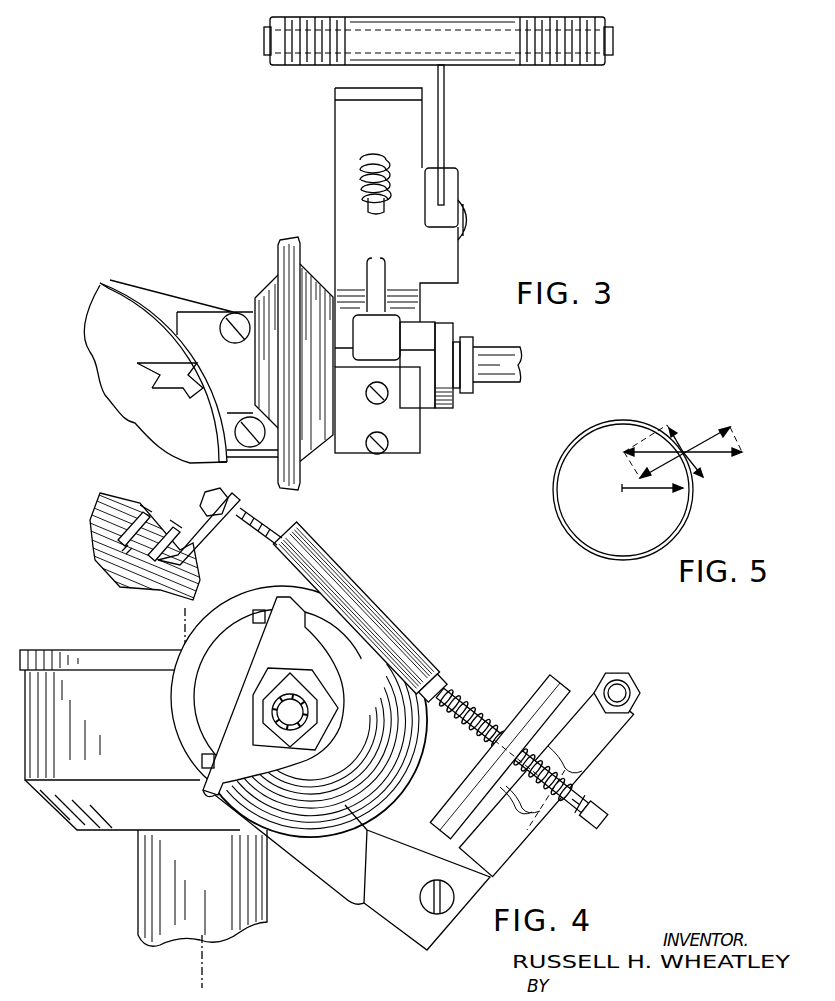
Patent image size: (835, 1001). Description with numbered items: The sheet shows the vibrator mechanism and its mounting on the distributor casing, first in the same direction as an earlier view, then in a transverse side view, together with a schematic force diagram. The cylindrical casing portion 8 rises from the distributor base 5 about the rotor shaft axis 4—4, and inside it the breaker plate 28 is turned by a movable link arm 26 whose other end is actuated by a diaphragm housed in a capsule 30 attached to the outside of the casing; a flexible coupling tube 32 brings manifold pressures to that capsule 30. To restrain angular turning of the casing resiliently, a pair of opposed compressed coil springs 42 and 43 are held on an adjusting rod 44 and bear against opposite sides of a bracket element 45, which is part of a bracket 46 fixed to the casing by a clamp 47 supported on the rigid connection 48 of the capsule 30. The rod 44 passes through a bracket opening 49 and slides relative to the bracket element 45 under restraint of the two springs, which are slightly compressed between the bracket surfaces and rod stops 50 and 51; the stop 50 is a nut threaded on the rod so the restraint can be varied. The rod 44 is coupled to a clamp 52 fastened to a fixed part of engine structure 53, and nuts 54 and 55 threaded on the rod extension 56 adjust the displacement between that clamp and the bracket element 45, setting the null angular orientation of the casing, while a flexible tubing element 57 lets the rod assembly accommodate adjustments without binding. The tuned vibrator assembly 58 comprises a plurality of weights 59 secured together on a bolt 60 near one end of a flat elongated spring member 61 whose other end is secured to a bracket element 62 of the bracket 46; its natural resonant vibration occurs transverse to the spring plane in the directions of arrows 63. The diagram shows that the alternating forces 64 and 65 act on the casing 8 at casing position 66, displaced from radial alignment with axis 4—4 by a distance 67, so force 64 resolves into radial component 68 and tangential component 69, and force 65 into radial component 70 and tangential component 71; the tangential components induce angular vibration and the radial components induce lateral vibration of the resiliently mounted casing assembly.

In FIG. 5, the rotor shaft axis 4 is at (622, 490).
In FIG. 4, the rotor shaft axis 4 is at (183, 626).
In FIG. 4, the distributor base 5 is at (150, 900).
In FIG. 3, the casing portion 8 is at (120, 288).
In FIG. 5, the casing portion 8 is at (558, 522).
In FIG. 4, the casing portion 8 is at (140, 700).
In FIG. 3, the link arm 26 is at (175, 384).
In FIG. 3, the breaker plate 28 is at (112, 350).
In FIG. 3, the capsule 30 is at (302, 458).
In FIG. 4, the capsule 30 is at (248, 654).
In FIG. 3, the coupling tube 32 is at (520, 345).
In FIG. 4, the coupling tube 32 is at (274, 702).
In FIG. 3, the coil spring 42 is at (366, 195).
In FIG. 4, the coil spring 42 is at (474, 727).
In FIG. 4, the coil spring 43 is at (567, 815).
In FIG. 3, the adjusting rod 44 is at (382, 208).
In FIG. 4, the adjusting rod 44 is at (465, 712).
In FIG. 3, the bracket element 45 is at (337, 132).
In FIG. 4, the bracket element 45 is at (540, 690).
In FIG. 3, the bracket 46 is at (408, 430).
In FIG. 4, the bracket 46 is at (345, 892).
In FIG. 3, the clamp 47 is at (388, 342).
In FIG. 4, the clamp 47 is at (296, 655).
In FIG. 3, the rigid connection 48 is at (420, 330).
In FIG. 4, the rigid connection 48 is at (255, 714).
In FIG. 4, the bracket opening 49 is at (515, 745).
In FIG. 4, the rod stop 50 is at (440, 682).
In FIG. 4, the rod stop 51 is at (600, 808).
In FIG. 4, the clamp 52 is at (178, 547).
In FIG. 4, the engine structure 53 is at (118, 565).
In FIG. 4, the nut 54 is at (212, 495).
In FIG. 4, the nut 55 is at (240, 505).
In FIG. 4, the rod extension 56 is at (250, 535).
In FIG. 4, the flexible tubing element 57 is at (362, 612).
In FIG. 3, the vibrator assembly 58 is at (520, 132).
In FIG. 4, the vibrator assembly 58 is at (584, 652).
In FIG. 3, the weights 59 is at (330, 66).
In FIG. 4, the weights 59 is at (640, 693).
In FIG. 3, the bolt 60 is at (272, 36).
In FIG. 4, the bolt 60 is at (622, 686).
In FIG. 3, the spring member 61 is at (445, 100).
In FIG. 4, the spring member 61 is at (598, 735).
In FIG. 3, the bracket element 62 is at (459, 190).
In FIG. 4, the bracket element 62 is at (432, 868).
In FIG. 3, the arrows 63 is at (410, 138).
In FIG. 5, the force 64 is at (655, 442).
In FIG. 5, the force 65 is at (735, 450).
In FIG. 5, the casing position 66 is at (688, 446).
In FIG. 5, the distance 67 is at (684, 470).
In FIG. 5, the radial component 68 is at (640, 470).
In FIG. 5, the tangential component 69 is at (672, 430).
In FIG. 5, the radial component 70 is at (722, 430).
In FIG. 5, the tangential component 71 is at (705, 470).